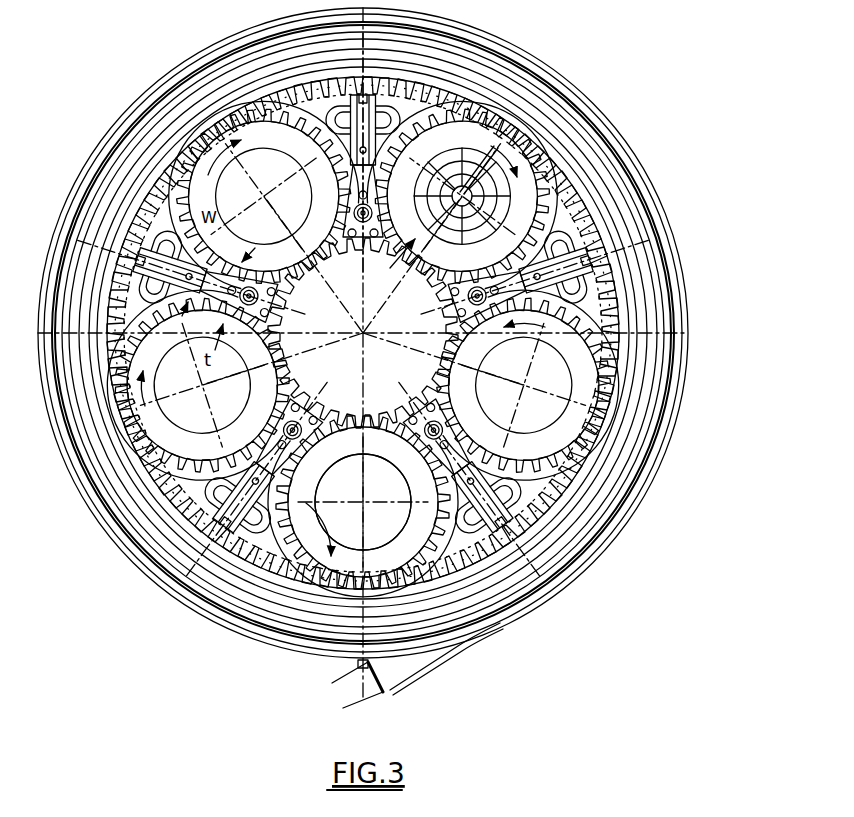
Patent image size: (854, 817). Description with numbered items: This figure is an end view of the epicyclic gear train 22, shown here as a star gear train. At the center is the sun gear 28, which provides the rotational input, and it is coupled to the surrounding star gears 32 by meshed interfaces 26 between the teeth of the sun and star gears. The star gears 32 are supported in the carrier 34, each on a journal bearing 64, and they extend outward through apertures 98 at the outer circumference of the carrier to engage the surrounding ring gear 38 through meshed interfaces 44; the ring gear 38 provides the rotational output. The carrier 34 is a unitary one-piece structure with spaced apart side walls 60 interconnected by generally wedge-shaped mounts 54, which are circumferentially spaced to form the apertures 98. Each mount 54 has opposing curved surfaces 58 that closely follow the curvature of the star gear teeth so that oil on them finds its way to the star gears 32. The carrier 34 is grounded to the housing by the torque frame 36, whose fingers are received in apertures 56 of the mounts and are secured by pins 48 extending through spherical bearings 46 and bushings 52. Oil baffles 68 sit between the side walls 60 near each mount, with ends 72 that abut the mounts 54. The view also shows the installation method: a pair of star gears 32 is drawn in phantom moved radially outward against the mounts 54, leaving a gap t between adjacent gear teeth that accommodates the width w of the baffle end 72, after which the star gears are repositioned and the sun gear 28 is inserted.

The epicyclic gear train 22 is at (648, 80).
The meshed interfaces 26 is at (458, 372).
The sun gear 28 is at (394, 401).
The star gears 32 is at (580, 400).
The carrier 34 is at (293, 575).
The torque frame 36 is at (530, 480).
The ring gear 38 is at (470, 118).
The meshed interfaces 44 is at (610, 372).
The spherical bearings 46 is at (519, 416).
The pins 48 is at (500, 505).
The bushings 52 is at (511, 410).
The mounts 54 is at (217, 490).
The apertures 56 is at (215, 532).
The curved surfaces 58 is at (268, 552).
The side walls 60 is at (428, 560).
The journal bearing 64 is at (357, 531).
The oil baffles 68 is at (283, 420).
The ends 72 is at (155, 345).
The apertures 98 is at (565, 471).